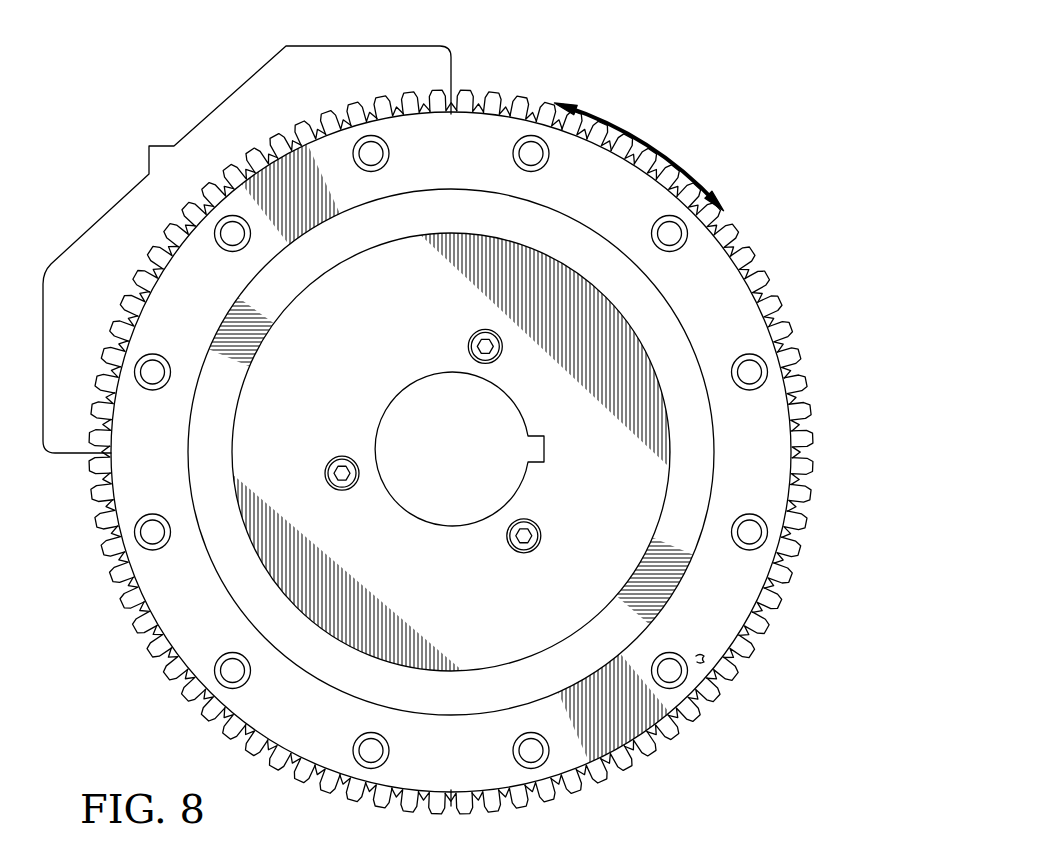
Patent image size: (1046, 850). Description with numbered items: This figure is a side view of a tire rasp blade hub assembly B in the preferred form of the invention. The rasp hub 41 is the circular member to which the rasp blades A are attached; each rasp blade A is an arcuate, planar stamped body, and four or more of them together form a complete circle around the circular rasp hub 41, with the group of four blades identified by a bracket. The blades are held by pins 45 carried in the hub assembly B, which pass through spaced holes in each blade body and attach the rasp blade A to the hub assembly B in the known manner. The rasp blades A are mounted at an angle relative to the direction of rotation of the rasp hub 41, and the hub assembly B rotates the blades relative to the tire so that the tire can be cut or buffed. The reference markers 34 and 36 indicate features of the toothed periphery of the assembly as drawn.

The ring gear 34 is at (757, 662).
The ring gear teeth 36 is at (653, 147).
The rasp hub 41 is at (722, 313).
The pins 45 is at (753, 532).
The rasp blade A is at (247, 249).
The rasp hub assembly B is at (685, 753).